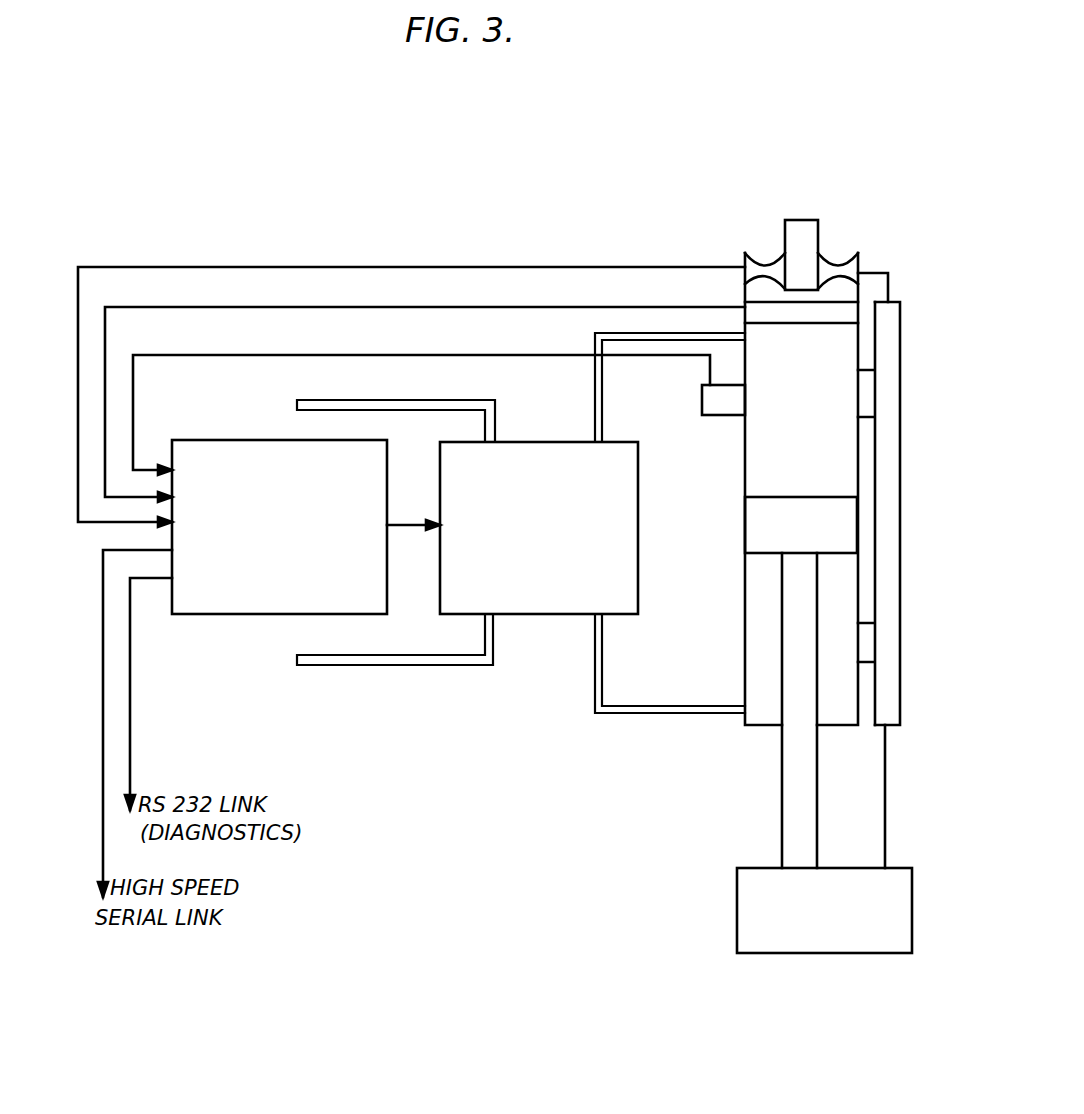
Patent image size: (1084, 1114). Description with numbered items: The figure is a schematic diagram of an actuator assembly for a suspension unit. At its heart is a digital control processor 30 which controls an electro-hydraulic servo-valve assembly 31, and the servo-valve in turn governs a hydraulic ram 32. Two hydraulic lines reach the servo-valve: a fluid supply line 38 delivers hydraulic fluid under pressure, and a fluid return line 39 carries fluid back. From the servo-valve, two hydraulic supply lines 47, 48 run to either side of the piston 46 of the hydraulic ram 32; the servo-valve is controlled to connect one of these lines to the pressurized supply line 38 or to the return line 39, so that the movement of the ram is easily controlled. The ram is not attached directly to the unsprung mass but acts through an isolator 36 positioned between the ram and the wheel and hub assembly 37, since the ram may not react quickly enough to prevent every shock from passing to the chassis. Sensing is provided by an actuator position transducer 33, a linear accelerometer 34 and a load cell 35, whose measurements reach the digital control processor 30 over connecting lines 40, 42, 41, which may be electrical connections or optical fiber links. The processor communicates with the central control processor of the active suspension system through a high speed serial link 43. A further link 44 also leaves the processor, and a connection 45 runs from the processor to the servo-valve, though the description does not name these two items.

The digital control processor 30 is at (212, 440).
The electro-hydraulic servo-valve assembly 31 is at (545, 616).
The hydraulic ram 32 is at (858, 523).
The actuator position transducer 33 is at (888, 690).
The linear accelerometer 34 is at (705, 397).
The load cell 35 is at (743, 303).
The isolator 36 is at (750, 252).
The wheel and hub assembly 37 is at (745, 903).
The fluid supply line 38 is at (352, 667).
The fluid return line 39 is at (382, 400).
The connecting line 40 is at (138, 266).
The connecting line 41 is at (183, 306).
The connecting line 42 is at (232, 352).
The high speed serial link 43 is at (103, 734).
The RS 232 diagnostics link 44 is at (130, 697).
The control signal line 45 is at (400, 525).
The piston 46 is at (755, 523).
The hydraulic supply line 47 is at (628, 716).
The hydraulic supply line 48 is at (630, 333).